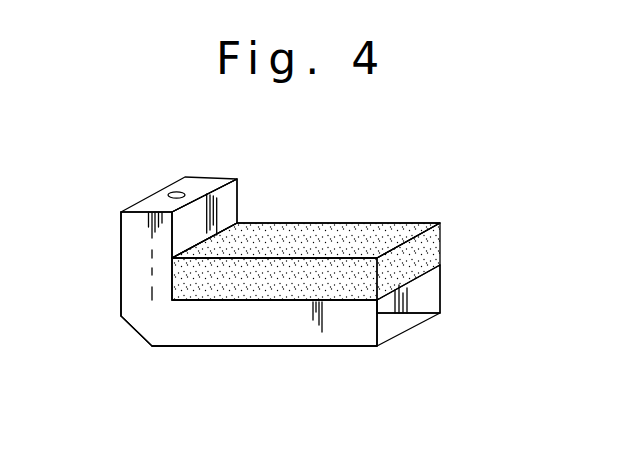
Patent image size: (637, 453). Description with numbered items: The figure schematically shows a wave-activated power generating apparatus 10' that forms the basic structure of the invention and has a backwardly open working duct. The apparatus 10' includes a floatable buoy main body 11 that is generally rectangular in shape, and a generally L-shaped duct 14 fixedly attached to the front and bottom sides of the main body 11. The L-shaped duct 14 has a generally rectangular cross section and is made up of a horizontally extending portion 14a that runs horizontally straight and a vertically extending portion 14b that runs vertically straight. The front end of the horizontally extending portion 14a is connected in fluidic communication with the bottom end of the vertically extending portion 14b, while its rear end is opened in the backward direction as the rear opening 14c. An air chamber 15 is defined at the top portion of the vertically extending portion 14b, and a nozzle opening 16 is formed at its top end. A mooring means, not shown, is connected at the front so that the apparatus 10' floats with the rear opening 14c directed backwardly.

The wave-activated power generating apparatus 10' is at (280, 249).
The floatable buoy main body 11 is at (322, 223).
The L-shaped duct 14 is at (211, 346).
The horizontally extending portion 14a is at (306, 332).
The vertically extending portion 14b is at (126, 280).
The rear opening 14c is at (409, 298).
The air chamber 15 is at (228, 200).
The nozzle opening 16 is at (167, 192).